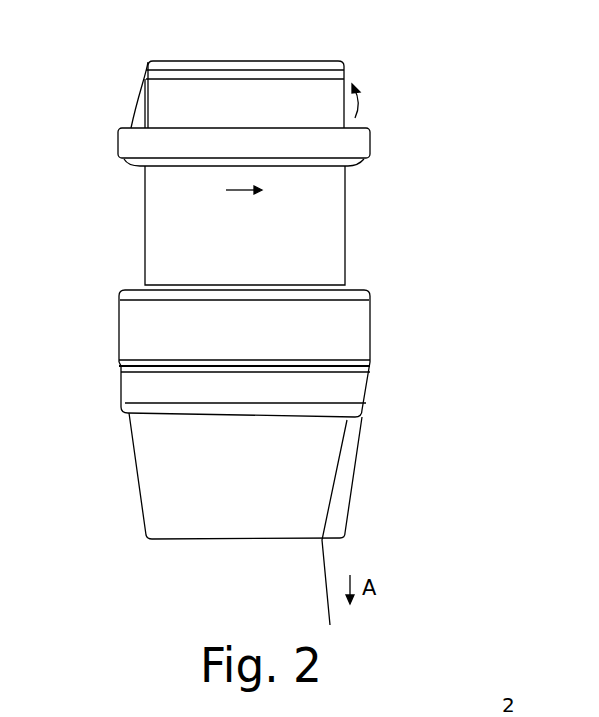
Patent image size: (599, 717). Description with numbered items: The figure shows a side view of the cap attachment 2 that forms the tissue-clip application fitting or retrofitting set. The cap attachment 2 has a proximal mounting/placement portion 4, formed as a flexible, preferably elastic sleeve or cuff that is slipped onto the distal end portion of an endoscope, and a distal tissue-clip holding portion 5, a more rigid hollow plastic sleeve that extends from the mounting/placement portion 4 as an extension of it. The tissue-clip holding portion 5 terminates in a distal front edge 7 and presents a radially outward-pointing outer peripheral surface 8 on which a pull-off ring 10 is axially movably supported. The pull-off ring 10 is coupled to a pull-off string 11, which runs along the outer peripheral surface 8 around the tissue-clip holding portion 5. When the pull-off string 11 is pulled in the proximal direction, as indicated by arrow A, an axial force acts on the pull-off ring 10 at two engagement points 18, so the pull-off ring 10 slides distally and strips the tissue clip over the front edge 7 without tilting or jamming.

The cap attachment 2 is at (399, 63).
The proximal mounting/placement portion 4 is at (347, 388).
The distal tissue-clip holding portion 5 is at (135, 325).
The distal front edge 7 is at (252, 58).
The outer peripheral surface 8 is at (143, 200).
The pull-off ring 10 is at (327, 147).
The pull-off string 11 is at (135, 105).
The engagement points 18 is at (130, 158).